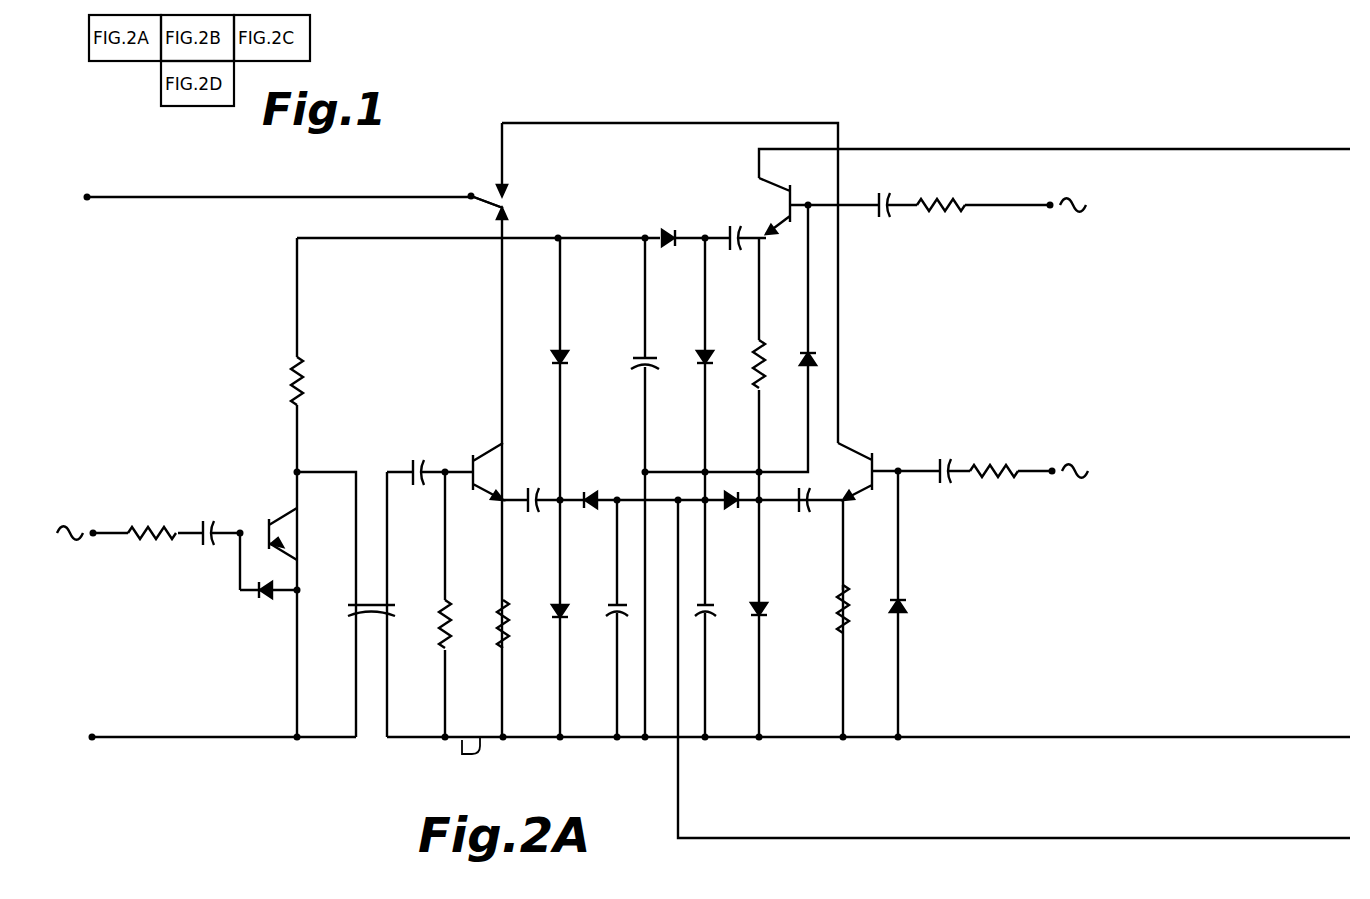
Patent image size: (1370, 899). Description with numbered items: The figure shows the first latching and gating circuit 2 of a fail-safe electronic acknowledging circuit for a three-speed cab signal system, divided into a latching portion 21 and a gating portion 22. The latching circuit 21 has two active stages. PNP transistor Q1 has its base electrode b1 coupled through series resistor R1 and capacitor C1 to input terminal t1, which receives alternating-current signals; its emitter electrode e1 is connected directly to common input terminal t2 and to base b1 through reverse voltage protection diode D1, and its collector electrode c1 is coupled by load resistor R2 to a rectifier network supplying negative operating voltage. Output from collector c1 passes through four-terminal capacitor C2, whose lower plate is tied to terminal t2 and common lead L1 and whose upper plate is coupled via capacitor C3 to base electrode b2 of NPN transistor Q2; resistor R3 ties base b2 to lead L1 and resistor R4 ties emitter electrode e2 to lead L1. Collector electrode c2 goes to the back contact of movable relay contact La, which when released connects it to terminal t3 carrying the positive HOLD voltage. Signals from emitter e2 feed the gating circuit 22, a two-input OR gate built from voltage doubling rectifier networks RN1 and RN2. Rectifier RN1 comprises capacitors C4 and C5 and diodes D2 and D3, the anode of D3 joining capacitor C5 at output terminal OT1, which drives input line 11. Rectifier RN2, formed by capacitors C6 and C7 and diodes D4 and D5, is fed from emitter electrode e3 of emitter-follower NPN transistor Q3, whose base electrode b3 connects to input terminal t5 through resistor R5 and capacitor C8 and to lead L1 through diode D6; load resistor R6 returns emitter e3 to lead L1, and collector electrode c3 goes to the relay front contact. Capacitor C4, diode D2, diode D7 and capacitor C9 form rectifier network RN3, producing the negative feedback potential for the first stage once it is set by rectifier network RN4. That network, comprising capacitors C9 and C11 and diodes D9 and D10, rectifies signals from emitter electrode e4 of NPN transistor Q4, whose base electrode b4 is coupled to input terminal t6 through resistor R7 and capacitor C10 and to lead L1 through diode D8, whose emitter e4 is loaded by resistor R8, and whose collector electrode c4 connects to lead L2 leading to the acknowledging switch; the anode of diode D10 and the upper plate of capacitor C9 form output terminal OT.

The latching and gating circuit 2 is at (580, 102).
The input line 11 is at (986, 825).
The latching portion 21 is at (366, 439).
The gating portion 22 is at (664, 589).
The input terminal t1 is at (109, 519).
The common input terminal t2 is at (109, 723).
The terminal t3 is at (109, 185).
The a.c. input signal terminal t5 is at (1033, 490).
The a.c. input terminal t6 is at (1031, 225).
The movable contact La is at (505, 207).
The common lead L1 is at (465, 755).
The lead L2 is at (998, 135).
The output terminal OT is at (626, 225).
The output terminal OT1 is at (702, 489).
The voltage doubling rectifier network RN1 is at (594, 580).
The voltage doubling rectifier network RN2 is at (733, 580).
The voltage doubling rectifier network RN3 is at (595, 470).
The voltage doubling rectifier network RN4 is at (678, 325).
The PNP transistor Q1 is at (288, 534).
The NPN transistor Q2 is at (493, 471).
The NPN transistor Q3 is at (853, 471).
The NPN transistor Q4 is at (767, 206).
The base electrode b1 is at (252, 519).
The collector electrode c1 is at (275, 499).
The emitter electrode e1 is at (276, 567).
The base electrode b2 is at (457, 454).
The collector electrode c2 is at (525, 449).
The emitter electrode e2 is at (467, 505).
The base electrode b3 is at (899, 454).
The collector electrode c3 is at (868, 439).
The emitter electrode e3 is at (876, 510).
The base electrode b4 is at (814, 184).
The collector electrode c4 is at (735, 184).
The emitter electrode e4 is at (789, 244).
The resistor R1 is at (151, 544).
The load resistor R2 is at (316, 379).
The resistor R3 is at (463, 624).
The resistor R4 is at (522, 624).
The resistor R5 is at (989, 457).
The load resistor R6 is at (824, 611).
The resistor R7 is at (938, 218).
The load resistor R8 is at (742, 369).
The capacitor C1 is at (198, 542).
The four-terminal capacitor C2 is at (387, 604).
The capacitor C3 is at (405, 484).
The capacitor C4 is at (524, 513).
The capacitor C5 is at (602, 624).
The capacitor C6 is at (790, 515).
The capacitor C7 is at (719, 626).
The capacitor C8 is at (931, 483).
The capacitor C9 is at (631, 353).
The capacitor C10 is at (868, 218).
The capacitor C11 is at (727, 249).
The reverse voltage protection diode D1 is at (257, 602).
The diode D2 is at (545, 626).
The diode D3 is at (585, 517).
The diode D4 is at (776, 596).
The diode D5 is at (727, 517).
The diode D6 is at (916, 595).
The diode D7 is at (547, 349).
The diode D8 is at (793, 373).
The diode D9 is at (688, 372).
The diode D10 is at (687, 225).